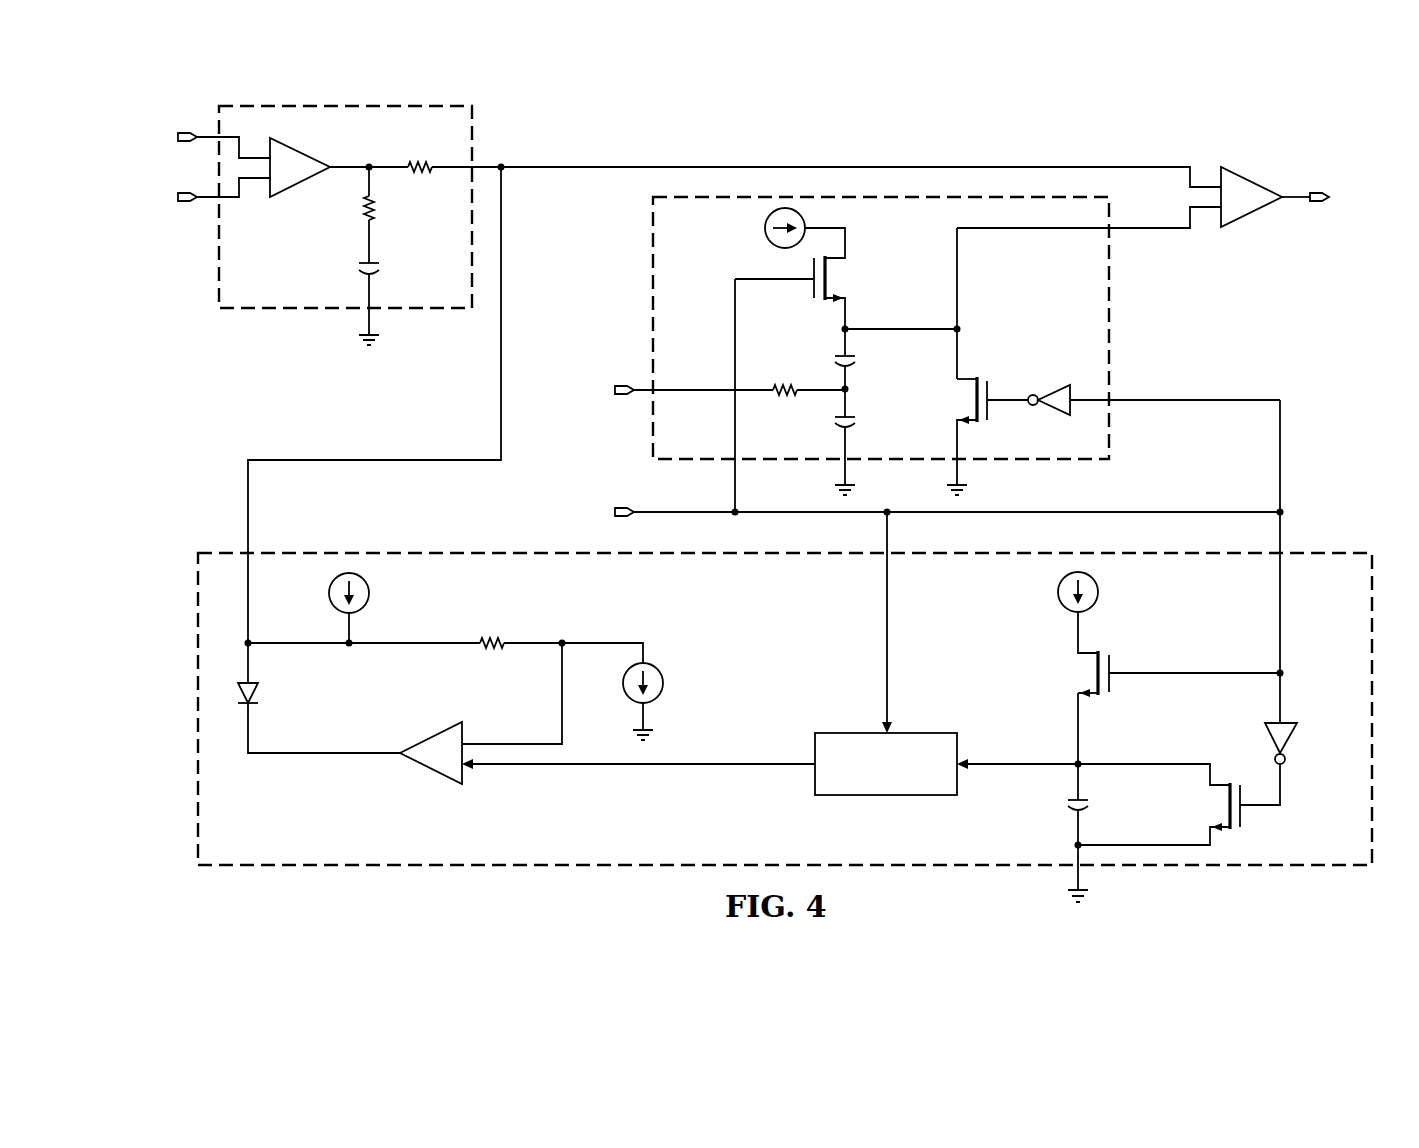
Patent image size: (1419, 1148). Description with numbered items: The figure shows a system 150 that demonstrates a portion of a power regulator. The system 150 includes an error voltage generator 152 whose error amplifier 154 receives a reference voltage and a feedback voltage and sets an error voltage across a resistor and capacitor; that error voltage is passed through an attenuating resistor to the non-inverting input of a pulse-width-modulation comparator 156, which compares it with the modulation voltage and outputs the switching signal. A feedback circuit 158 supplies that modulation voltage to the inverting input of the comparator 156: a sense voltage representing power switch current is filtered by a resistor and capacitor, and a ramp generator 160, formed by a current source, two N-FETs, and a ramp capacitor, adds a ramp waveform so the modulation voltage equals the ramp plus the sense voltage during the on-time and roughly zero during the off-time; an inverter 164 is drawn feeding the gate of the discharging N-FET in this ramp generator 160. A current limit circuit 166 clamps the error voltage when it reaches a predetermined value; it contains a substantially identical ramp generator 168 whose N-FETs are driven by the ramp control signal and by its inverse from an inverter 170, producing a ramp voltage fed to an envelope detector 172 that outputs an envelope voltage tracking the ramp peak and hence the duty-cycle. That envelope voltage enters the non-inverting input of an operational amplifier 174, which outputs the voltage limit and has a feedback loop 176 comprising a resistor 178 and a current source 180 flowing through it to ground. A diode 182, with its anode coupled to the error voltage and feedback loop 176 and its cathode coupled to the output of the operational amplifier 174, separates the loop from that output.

The system 150 is at (1368, 134).
The error voltage generator 152 is at (270, 314).
The error amplifier 154 is at (300, 185).
The PWM comparator 156 is at (1250, 178).
The feedback circuit 158 is at (650, 280).
The ramp generator 160 is at (965, 327).
The inverter 164 is at (1053, 388).
The current limit circuit 166 is at (194, 770).
The ramp generator 168 is at (1115, 663).
The inverter 170 is at (1293, 742).
The envelope detector 172 is at (917, 795).
The operational amplifier 174 is at (430, 775).
The feedback loop 176 is at (493, 635).
The resistor RSET 178 is at (372, 595).
The current source ISET 180 is at (660, 670).
The diode 182 is at (255, 693).